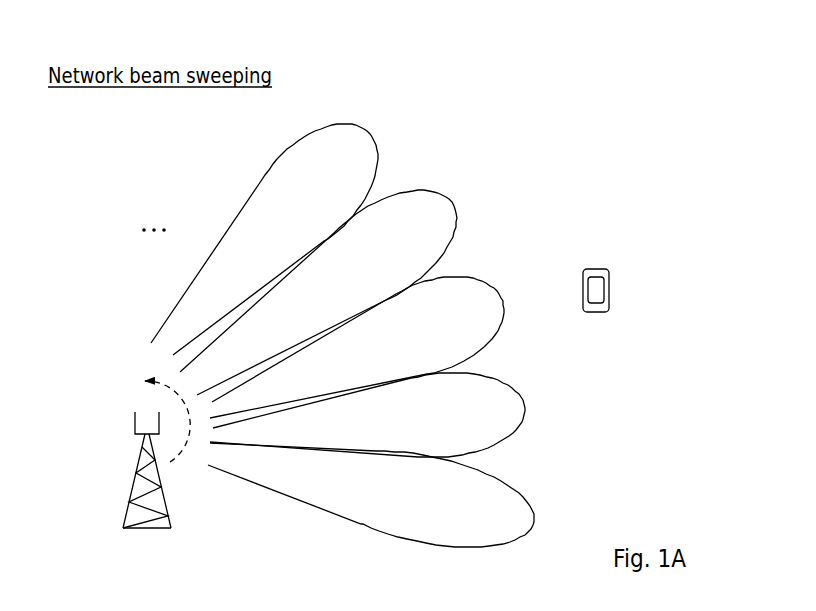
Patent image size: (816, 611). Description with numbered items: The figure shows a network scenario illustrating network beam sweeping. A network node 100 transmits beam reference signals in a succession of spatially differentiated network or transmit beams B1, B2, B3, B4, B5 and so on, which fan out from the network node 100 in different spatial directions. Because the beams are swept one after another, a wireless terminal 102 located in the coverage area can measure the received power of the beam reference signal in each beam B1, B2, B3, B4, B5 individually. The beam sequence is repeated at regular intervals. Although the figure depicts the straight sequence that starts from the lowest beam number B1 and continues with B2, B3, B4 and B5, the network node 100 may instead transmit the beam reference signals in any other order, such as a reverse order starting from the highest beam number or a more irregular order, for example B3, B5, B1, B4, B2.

The network node 100 is at (115, 414).
The wireless terminal 102 is at (610, 284).
The network/transmit beam B1 is at (208, 455).
The network/transmit beam B2 is at (213, 430).
The network/transmit beam B3 is at (207, 415).
The network/transmit beam B4 is at (193, 390).
The network/transmit beam B5 is at (160, 345).